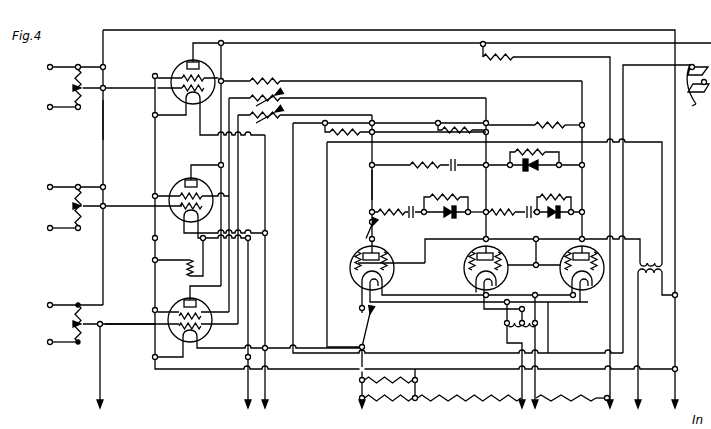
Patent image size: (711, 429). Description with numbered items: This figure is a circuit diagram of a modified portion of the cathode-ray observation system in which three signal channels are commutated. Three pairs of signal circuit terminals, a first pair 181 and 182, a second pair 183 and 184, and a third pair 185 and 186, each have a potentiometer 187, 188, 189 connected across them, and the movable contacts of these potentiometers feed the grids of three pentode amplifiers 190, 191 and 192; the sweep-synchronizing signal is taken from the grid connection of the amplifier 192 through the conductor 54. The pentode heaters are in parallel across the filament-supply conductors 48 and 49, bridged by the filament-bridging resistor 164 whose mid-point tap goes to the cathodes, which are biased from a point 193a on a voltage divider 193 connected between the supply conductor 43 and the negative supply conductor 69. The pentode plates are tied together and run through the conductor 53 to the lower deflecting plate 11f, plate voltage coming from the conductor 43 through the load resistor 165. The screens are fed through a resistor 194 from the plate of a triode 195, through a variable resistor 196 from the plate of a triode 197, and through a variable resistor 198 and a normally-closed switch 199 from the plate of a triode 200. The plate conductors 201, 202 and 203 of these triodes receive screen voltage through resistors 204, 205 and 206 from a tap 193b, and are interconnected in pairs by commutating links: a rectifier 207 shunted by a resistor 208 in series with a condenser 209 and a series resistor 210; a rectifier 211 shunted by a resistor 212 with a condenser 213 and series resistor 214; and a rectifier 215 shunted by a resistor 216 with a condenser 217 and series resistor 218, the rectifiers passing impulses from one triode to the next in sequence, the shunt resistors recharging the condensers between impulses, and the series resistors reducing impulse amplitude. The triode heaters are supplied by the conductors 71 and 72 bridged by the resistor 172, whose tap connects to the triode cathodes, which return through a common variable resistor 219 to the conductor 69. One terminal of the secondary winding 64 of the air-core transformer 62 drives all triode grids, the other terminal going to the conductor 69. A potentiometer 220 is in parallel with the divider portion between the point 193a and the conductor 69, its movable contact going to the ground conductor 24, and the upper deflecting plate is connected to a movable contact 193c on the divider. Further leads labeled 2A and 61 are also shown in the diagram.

The signal circuit terminal 181 is at (46, 66).
The potentiometer 187 is at (72, 88).
The signal circuit terminal 182 is at (46, 107).
The bus conductor 2A is at (110, 127).
The pentode amplifier 190 is at (180, 68).
The resistor 194 is at (262, 80).
The variable resistor 196 is at (284, 98).
The variable resistor 198 is at (284, 114).
The load resistor 165 is at (504, 58).
The conductor 53 is at (684, 44).
The deflecting plates 11f is at (696, 111).
The signal circuit terminal 183 is at (46, 186).
The potentiometer 188 is at (72, 208).
The signal circuit terminal 184 is at (46, 227).
The pentode amplifier 191 is at (183, 184).
The filament-bridging resistor 164 is at (188, 258).
The pentode amplifier 192 is at (182, 304).
The signal circuit terminal 185 is at (46, 304).
The potentiometer 189 is at (72, 326).
The signal circuit terminal 186 is at (46, 341).
The conductor 54 is at (97, 377).
The filament-supply conductor 49 is at (245, 332).
The filament-supply conductor 48 is at (264, 281).
The resistor 206 is at (330, 138).
The resistor 205 is at (438, 130).
The resistor 204 is at (532, 129).
The resistor 216 is at (557, 132).
The series resistor 218 is at (412, 157).
The condenser 217 is at (455, 159).
The conductor 203 is at (370, 182).
The series resistor 214 is at (396, 203).
The condenser 213 is at (412, 215).
The rectifier 211 is at (448, 217).
The resistor 212 is at (444, 197).
The conductor 202 is at (484, 186).
The series resistor 210 is at (507, 222).
The condenser 209 is at (528, 218).
The rectifier 207 is at (560, 220).
The resistor 208 is at (551, 197).
The rectifier 215 is at (526, 170).
The conductor 201 is at (566, 170).
The normally-closed switch 199 is at (362, 230).
The triode 200 is at (391, 277).
The triode 197 is at (496, 286).
The triode 195 is at (577, 298).
The variable resistor 219 is at (410, 332).
The potentiometer 220 is at (362, 378).
The negative supply conductor 69 is at (359, 405).
The point on voltage divider 193a is at (402, 406).
The voltage divider 193 is at (446, 406).
The tap 193b is at (496, 406).
The movable potentiometer contact 193c is at (542, 398).
The filament-bridging resistor 172 is at (529, 330).
The filament-supply conductor 72 is at (516, 413).
The filament-supply conductor 71 is at (535, 413).
The supply conductor 43 is at (605, 413).
The output lead 61 is at (635, 350).
The ground conductor 24 is at (671, 413).
The secondary winding 64 is at (650, 259).
The air-core transformer 62 is at (650, 284).